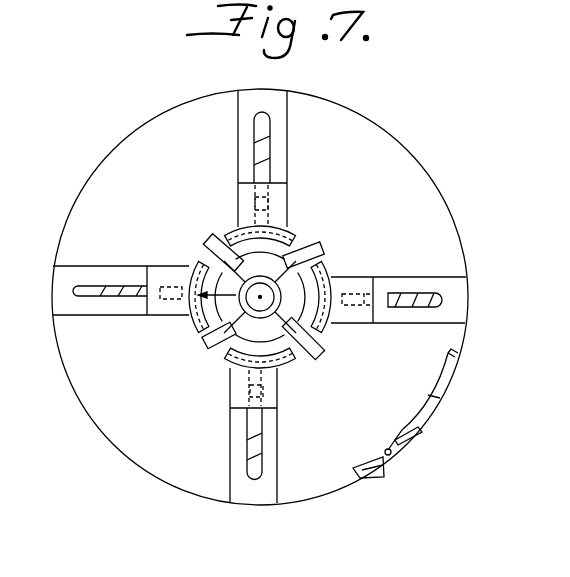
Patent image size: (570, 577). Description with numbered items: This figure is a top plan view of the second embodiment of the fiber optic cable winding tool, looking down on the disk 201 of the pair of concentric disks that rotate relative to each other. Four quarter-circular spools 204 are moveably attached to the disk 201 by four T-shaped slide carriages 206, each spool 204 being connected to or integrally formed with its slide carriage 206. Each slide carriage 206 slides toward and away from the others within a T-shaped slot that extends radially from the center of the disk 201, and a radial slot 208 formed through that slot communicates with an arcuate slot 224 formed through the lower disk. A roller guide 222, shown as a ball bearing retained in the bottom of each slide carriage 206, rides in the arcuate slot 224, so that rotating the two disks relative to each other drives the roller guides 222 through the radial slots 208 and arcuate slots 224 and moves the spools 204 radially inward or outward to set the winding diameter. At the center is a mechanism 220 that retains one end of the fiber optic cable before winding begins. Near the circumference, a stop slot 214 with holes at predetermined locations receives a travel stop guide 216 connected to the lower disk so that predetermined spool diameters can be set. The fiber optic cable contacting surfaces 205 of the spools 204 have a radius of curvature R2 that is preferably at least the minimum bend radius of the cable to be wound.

The disk 201 is at (413, 188).
The quarter-circular spool 204 is at (318, 257).
The fiber optic cable contacting surface 205 is at (220, 230).
The T-shaped slide carriage 206 is at (155, 278).
The radial slot 208 is at (96, 299).
The stop slot 214 is at (437, 397).
The travel stop guide 216 is at (383, 473).
The mechanism 220 is at (260, 297).
The roller guide 222 is at (205, 388).
The arcuate slot 224 is at (112, 293).
The radius of curvature R2 is at (236, 292).